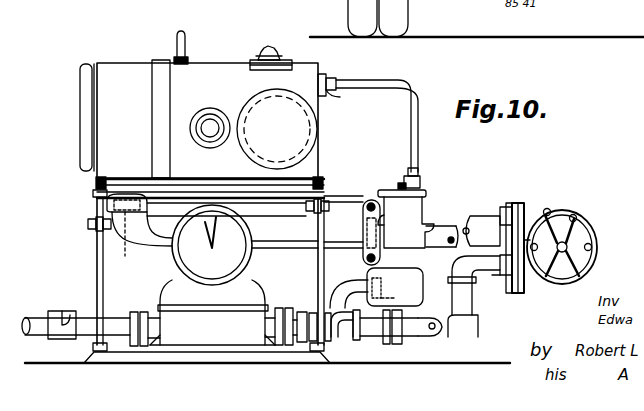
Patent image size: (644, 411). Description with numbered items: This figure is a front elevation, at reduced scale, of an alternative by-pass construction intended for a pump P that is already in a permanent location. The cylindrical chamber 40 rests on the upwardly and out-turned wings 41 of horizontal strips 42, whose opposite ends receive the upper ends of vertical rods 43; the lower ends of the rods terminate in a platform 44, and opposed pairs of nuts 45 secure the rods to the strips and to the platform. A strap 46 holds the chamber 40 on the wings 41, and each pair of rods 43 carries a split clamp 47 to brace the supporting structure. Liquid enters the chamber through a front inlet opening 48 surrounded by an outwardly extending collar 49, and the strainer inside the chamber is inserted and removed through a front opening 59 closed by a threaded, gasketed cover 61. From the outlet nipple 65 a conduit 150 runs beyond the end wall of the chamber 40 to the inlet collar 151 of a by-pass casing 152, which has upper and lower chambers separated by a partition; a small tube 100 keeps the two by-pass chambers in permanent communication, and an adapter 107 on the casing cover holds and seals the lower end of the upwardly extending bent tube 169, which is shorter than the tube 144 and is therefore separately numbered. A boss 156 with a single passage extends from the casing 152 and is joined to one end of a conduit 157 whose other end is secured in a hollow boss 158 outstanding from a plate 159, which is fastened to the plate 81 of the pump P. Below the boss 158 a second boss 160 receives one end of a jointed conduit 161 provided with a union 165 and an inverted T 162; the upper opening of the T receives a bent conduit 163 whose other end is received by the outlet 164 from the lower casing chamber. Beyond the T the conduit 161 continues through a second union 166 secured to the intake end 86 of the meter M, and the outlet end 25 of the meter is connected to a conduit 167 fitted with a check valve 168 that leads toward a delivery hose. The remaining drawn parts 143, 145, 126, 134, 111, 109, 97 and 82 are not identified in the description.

The chamber 40 is at (118, 78).
The end cap 143 is at (85, 106).
The strap 46 is at (157, 98).
The tube 144 is at (184, 38).
The nut 145 is at (189, 58).
The relief valve 126 is at (267, 48).
The cover plate 134 is at (280, 62).
The fitting 111 is at (332, 78).
The connection 109 is at (342, 97).
The tube 169 is at (418, 100).
The collar 49 is at (203, 110).
The front inlet opening 48 is at (214, 122).
The cover 61 is at (316, 119).
The front opening 59 is at (310, 140).
The wings 41 is at (322, 178).
The nuts 45 is at (96, 182).
The horizontal strips 42 is at (94, 192).
The split clamp 47 is at (88, 224).
The vertical rods 43 is at (97, 254).
The nipple 65 is at (127, 232).
The tube 100 is at (358, 210).
The conduit 150 is at (162, 240).
The outlet end 25 is at (162, 332).
The meter M is at (216, 345).
The conduit 167 is at (37, 336).
The check valve 168 is at (58, 320).
The intake end 86 is at (258, 335).
The platform 44 is at (275, 350).
The second union 166 is at (305, 345).
The inverted T 162 is at (342, 328).
The union 165 is at (393, 342).
The jointed conduit 161 is at (425, 336).
The bent conduit 163 is at (350, 282).
The outlet 164 is at (395, 287).
The inlet collar 151 is at (365, 234).
The valve stem 97 is at (402, 188).
The adapter 107 is at (421, 188).
The by-pass casing 152 is at (406, 219).
The conduit 157 is at (450, 228).
The boss 156 is at (462, 269).
The hollow boss 158 is at (500, 208).
The plate 159 is at (510, 203).
The plate 81 is at (524, 206).
The shaft 82 is at (522, 293).
The second boss 160 is at (508, 293).
The pump P is at (582, 236).